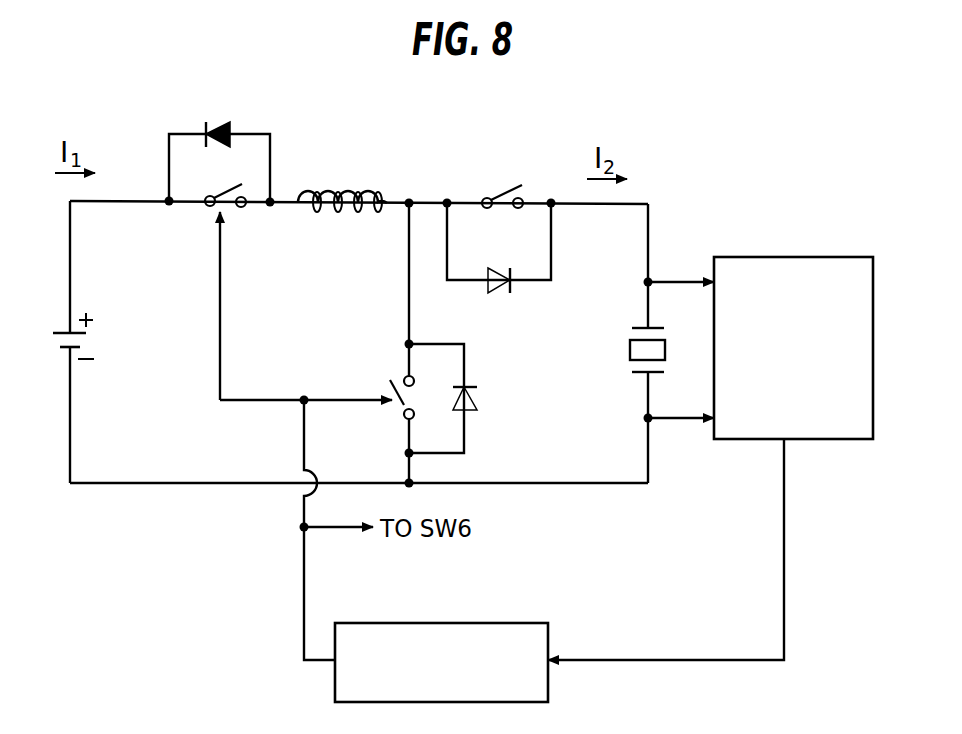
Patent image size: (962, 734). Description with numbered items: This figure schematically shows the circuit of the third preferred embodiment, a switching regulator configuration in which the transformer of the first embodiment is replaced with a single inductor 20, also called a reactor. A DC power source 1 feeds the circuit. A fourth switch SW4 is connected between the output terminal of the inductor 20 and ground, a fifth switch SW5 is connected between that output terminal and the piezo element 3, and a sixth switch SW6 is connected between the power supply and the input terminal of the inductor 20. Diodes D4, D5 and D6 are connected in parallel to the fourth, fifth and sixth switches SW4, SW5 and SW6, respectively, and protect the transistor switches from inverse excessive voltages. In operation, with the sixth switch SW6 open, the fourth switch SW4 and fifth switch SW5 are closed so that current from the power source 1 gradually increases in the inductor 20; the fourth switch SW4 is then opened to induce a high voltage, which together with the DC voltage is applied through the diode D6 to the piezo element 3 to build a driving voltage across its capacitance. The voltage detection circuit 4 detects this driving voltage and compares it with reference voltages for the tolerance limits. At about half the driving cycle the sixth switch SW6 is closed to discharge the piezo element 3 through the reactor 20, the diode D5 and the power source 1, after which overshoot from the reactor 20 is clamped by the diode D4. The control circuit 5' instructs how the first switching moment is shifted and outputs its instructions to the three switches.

The power source 1 is at (62, 330).
The piezo element 3 is at (641, 325).
The voltage detection circuit 4 is at (787, 255).
The control circuit 5' is at (441, 644).
The inductor 20 is at (342, 190).
The diode D4 is at (478, 398).
The diode D5 is at (219, 123).
The diode D6 is at (497, 287).
The fourth switch SW4 is at (388, 392).
The fifth switch SW5 is at (230, 211).
The sixth switch SW6 is at (502, 190).